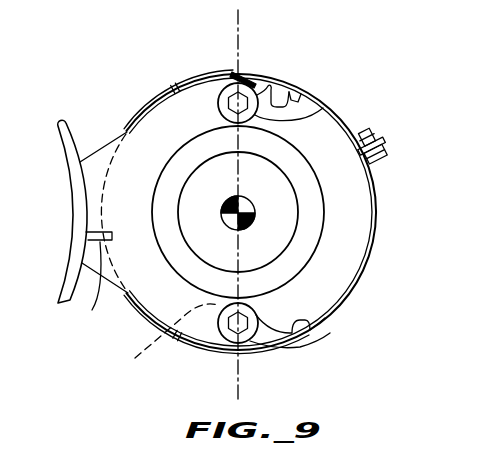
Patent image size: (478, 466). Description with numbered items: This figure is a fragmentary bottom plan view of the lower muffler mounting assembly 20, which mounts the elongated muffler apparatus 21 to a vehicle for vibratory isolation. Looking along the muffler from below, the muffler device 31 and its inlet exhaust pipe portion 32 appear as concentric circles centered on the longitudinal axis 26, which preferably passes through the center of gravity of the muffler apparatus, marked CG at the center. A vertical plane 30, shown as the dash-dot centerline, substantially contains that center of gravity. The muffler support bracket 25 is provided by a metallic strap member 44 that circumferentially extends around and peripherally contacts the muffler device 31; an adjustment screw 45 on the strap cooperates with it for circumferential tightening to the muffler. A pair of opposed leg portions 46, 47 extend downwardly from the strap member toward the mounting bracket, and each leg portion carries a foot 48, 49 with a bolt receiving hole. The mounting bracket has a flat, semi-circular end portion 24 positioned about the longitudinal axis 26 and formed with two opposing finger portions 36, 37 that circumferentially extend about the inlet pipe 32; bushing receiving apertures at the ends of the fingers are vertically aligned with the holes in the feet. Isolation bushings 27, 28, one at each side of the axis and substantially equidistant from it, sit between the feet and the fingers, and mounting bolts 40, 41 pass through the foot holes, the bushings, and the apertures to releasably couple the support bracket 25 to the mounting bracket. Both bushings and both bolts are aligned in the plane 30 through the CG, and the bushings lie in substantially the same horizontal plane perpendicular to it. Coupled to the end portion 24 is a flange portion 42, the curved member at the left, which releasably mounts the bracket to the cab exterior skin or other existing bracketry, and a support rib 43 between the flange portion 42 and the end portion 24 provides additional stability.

The lower muffler mounting assembly 20 is at (276, 207).
The muffler apparatus 21 is at (185, 87).
The end portion 24 is at (173, 115).
The muffler support bracket 25 is at (331, 326).
The longitudinal axis 26 is at (248, 203).
The isolation mounting device (bushing) 27 is at (254, 78).
The isolation mounting device (bushing) 28 is at (213, 342).
The plane 30 is at (243, 18).
The muffler device 31 is at (276, 219).
The inlet exhaust pipe portion 32 is at (298, 228).
The finger portion 36 is at (325, 119).
The finger portion 37 is at (262, 345).
The mounting bolt 40 is at (188, 76).
The mounting bolt 41 is at (247, 346).
The flange portion 42 is at (60, 146).
The support rib 43 is at (92, 310).
The strap member 44 is at (276, 219).
The adjustment screw 45 is at (388, 146).
The leg portion 46 is at (300, 100).
The leg portion 47 is at (310, 335).
The foot 48 is at (275, 119).
The foot 49 is at (159, 252).